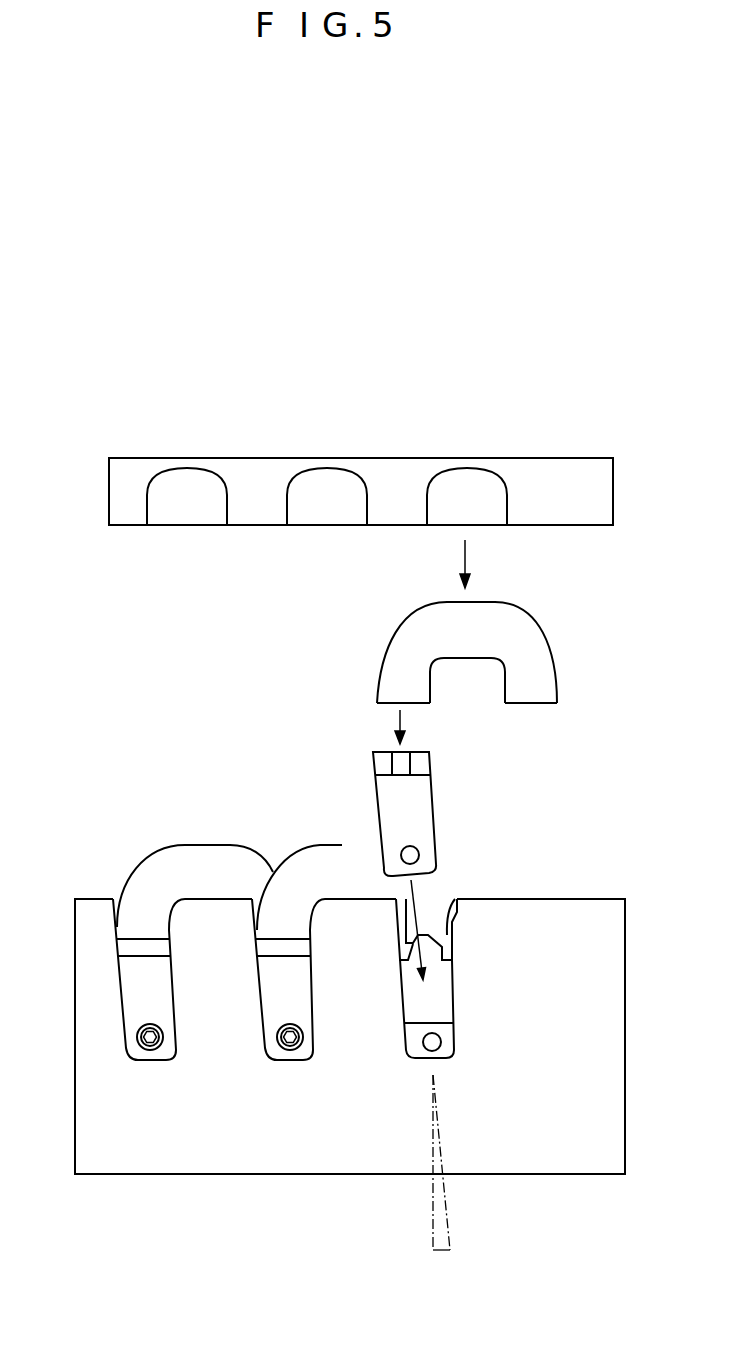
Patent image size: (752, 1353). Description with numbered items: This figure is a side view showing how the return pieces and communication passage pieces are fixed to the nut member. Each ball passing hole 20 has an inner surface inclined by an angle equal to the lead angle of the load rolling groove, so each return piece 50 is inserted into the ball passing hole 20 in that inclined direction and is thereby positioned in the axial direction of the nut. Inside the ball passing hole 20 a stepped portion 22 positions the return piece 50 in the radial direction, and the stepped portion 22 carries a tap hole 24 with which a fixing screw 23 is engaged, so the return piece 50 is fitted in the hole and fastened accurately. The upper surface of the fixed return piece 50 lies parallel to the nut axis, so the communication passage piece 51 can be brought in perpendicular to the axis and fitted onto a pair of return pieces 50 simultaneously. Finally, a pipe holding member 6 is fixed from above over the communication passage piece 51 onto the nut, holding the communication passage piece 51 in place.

The pipe holding member 6 is at (257, 473).
The communication passage piece 51 is at (537, 660).
The return piece 50 is at (415, 803).
The ball passing hole 20 is at (452, 1000).
The fixing screw 23 is at (147, 1063).
The tap hole 24 is at (417, 1063).
The stepped portion 22 is at (447, 1063).